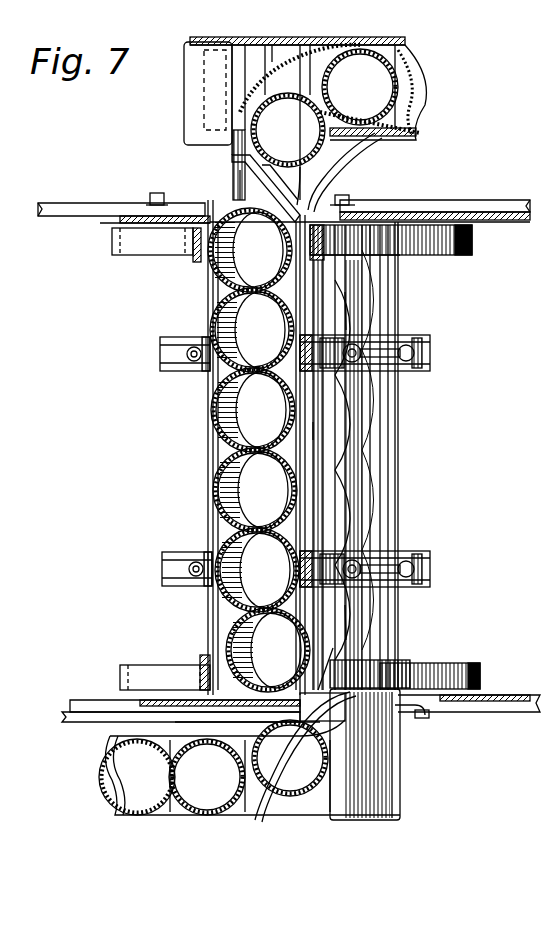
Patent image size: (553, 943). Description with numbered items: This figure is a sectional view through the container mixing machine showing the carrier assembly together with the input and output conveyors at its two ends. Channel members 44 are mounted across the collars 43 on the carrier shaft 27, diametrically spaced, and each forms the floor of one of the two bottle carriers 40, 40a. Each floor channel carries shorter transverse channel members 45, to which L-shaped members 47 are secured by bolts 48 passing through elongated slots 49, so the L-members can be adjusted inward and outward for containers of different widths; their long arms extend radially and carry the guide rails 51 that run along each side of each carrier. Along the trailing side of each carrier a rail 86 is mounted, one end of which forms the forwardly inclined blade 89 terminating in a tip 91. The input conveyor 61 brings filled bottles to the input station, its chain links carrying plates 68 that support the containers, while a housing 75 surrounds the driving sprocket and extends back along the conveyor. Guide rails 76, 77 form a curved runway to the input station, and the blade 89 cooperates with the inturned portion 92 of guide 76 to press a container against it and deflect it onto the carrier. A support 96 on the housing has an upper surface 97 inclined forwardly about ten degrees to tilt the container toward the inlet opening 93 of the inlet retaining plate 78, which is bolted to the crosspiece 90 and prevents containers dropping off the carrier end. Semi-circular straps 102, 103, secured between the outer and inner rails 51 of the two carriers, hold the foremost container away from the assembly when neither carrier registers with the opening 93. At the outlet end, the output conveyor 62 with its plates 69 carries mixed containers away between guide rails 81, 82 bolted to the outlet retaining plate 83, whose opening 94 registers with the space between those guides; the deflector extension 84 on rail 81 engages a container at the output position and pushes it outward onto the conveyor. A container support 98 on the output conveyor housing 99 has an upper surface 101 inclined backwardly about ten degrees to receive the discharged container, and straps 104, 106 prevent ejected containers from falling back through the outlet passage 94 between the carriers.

The input conveyor 61 is at (432, 64).
The guide rail 76 is at (332, 62).
The plate 68 is at (272, 62).
The inturned portion 92 is at (250, 98).
The housing 75 is at (186, 128).
The guide rail 77 is at (350, 148).
The hook or blade 89 is at (280, 190).
The tip 91 is at (232, 158).
The upper surface 97 is at (238, 181).
The support 96 is at (205, 197).
The crosspiece 90 is at (114, 203).
The inlet retaining plate 78 is at (406, 212).
The bottle carrier 40 is at (188, 438).
The bottle carrier 40a is at (410, 443).
The semi-circular strap 102 is at (462, 255).
The semi-circular strap 103 is at (400, 255).
The inlet opening 93 is at (204, 248).
The collar 43 is at (345, 292).
The L-shaped member 47 is at (178, 340).
The bolt 48 is at (194, 362).
The elongated slot 49 is at (162, 355).
The channel member 45 is at (385, 370).
The rail 86 is at (305, 424).
The guide rail 51 is at (215, 452).
The channel member 44 is at (320, 492).
The deflector extension 84 is at (333, 648).
The strap 106 is at (380, 665).
The strap 104 is at (482, 674).
The output conveyor housing 99 is at (402, 787).
The container support 98 is at (345, 715).
The outlet opening 94 is at (300, 700).
The upper surface 101 is at (405, 722).
The outlet retaining plate 83 is at (468, 712).
The guide rail 81 is at (125, 728).
The guide rail 82 is at (118, 814).
The output conveyor 62 is at (90, 750).
The plate 69 is at (207, 777).
The shaft 27 is at (290, 758).